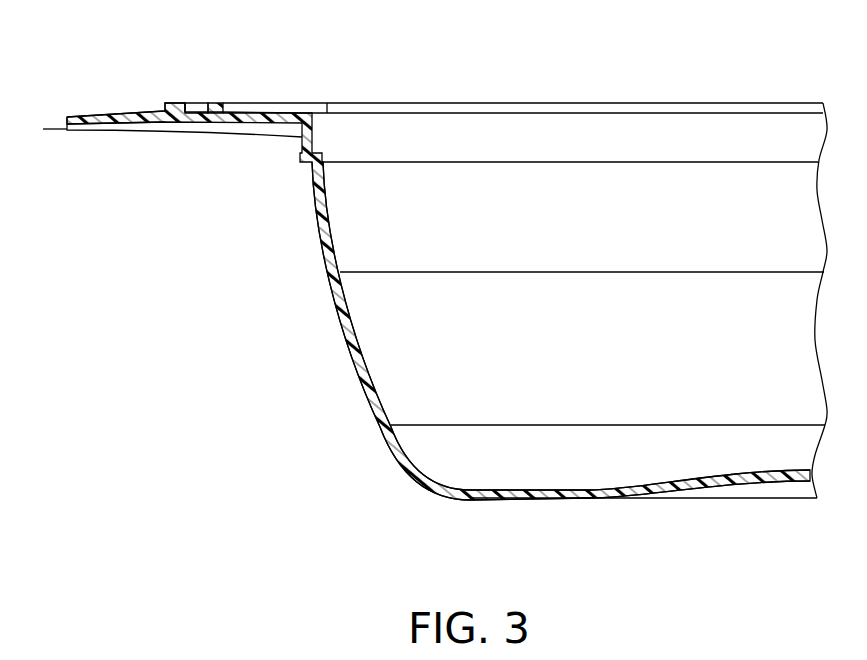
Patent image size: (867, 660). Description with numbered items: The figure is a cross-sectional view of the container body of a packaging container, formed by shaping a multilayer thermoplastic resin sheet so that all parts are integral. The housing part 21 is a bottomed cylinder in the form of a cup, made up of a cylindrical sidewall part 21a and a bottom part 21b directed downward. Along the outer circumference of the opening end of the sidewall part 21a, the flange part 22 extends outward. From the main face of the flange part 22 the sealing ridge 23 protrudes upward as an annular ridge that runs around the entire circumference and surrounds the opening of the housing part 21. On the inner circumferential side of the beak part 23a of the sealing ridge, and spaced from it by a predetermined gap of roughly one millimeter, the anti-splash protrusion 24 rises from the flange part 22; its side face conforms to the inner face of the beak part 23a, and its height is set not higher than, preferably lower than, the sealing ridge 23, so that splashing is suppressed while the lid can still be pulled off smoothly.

The housing part 21 is at (355, 355).
The sidewall part 21a is at (320, 232).
The bottom part 21b is at (528, 500).
The flange part 22 is at (119, 113).
The sealing ridge 23 is at (198, 107).
The beak part 23a is at (177, 103).
The anti-splash protrusion 24 is at (219, 104).